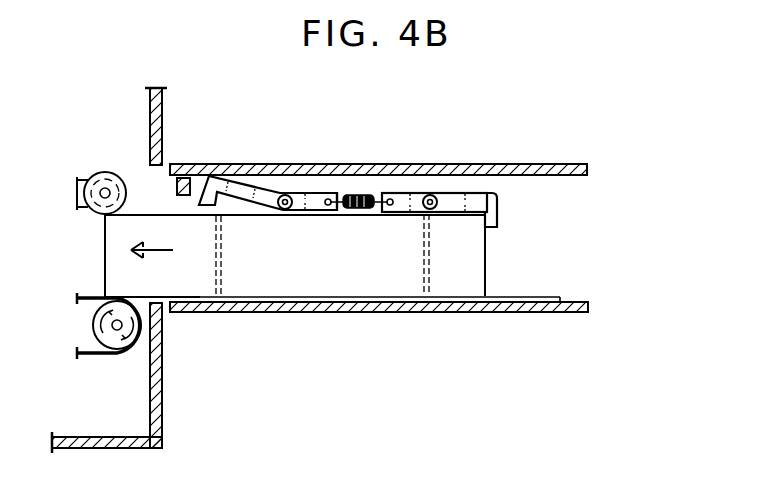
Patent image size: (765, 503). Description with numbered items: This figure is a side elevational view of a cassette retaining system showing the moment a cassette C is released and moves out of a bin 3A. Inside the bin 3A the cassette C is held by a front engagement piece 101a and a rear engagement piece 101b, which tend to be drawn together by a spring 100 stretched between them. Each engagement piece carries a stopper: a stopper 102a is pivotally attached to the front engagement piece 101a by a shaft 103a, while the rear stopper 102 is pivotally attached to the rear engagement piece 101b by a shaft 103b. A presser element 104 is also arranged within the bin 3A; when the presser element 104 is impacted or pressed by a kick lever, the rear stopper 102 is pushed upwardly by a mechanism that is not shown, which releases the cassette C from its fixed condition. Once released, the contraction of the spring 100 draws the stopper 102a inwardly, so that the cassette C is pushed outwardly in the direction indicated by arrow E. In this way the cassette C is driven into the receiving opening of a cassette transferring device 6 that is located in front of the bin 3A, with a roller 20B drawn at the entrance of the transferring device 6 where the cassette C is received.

The cassette transferring device 6 is at (162, 396).
The cassette C is at (245, 286).
The lower roller 20B is at (100, 356).
The arrow E is at (162, 252).
The presser element 104 is at (185, 178).
The lever 102 is at (232, 185).
The shaft 103b is at (285, 195).
The rear engagement piece 101b is at (310, 194).
The spring 100 is at (358, 195).
The front engagement piece 101a is at (395, 194).
The shaft 103a is at (431, 195).
The stopper 102a is at (486, 196).
The bin 3A is at (520, 230).